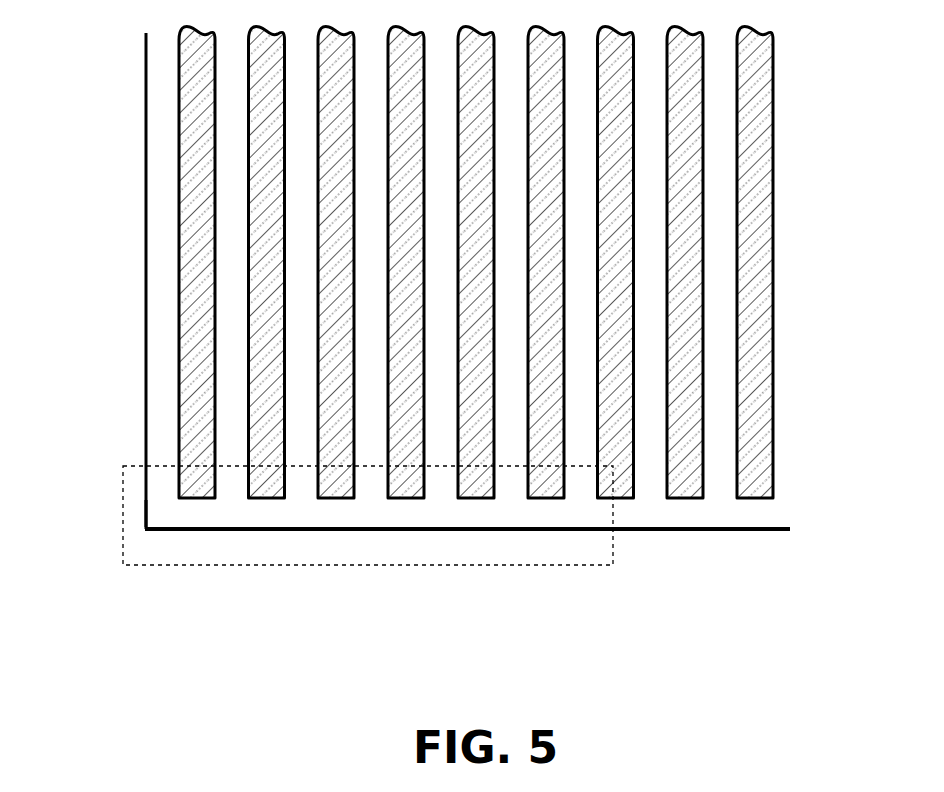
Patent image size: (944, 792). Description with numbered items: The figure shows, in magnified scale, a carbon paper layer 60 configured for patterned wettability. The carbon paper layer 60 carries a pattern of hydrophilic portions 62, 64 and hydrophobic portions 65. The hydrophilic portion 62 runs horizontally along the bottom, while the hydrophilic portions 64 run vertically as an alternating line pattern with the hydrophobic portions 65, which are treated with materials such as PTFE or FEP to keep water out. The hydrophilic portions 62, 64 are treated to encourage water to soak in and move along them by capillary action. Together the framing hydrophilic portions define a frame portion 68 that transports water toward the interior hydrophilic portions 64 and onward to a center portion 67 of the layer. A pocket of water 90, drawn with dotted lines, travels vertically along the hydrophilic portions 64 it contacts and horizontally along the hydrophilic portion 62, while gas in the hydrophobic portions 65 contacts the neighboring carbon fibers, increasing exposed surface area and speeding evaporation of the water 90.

The carbon paper layer 60 is at (120, 320).
The hydrophilic portion 62 is at (678, 515).
The hydrophilic portions 64 is at (367, 228).
The hydrophobic portions 65 is at (548, 252).
The center portion 67 is at (442, 267).
The frame portion 68 is at (263, 513).
The pocket of water 90 is at (397, 566).